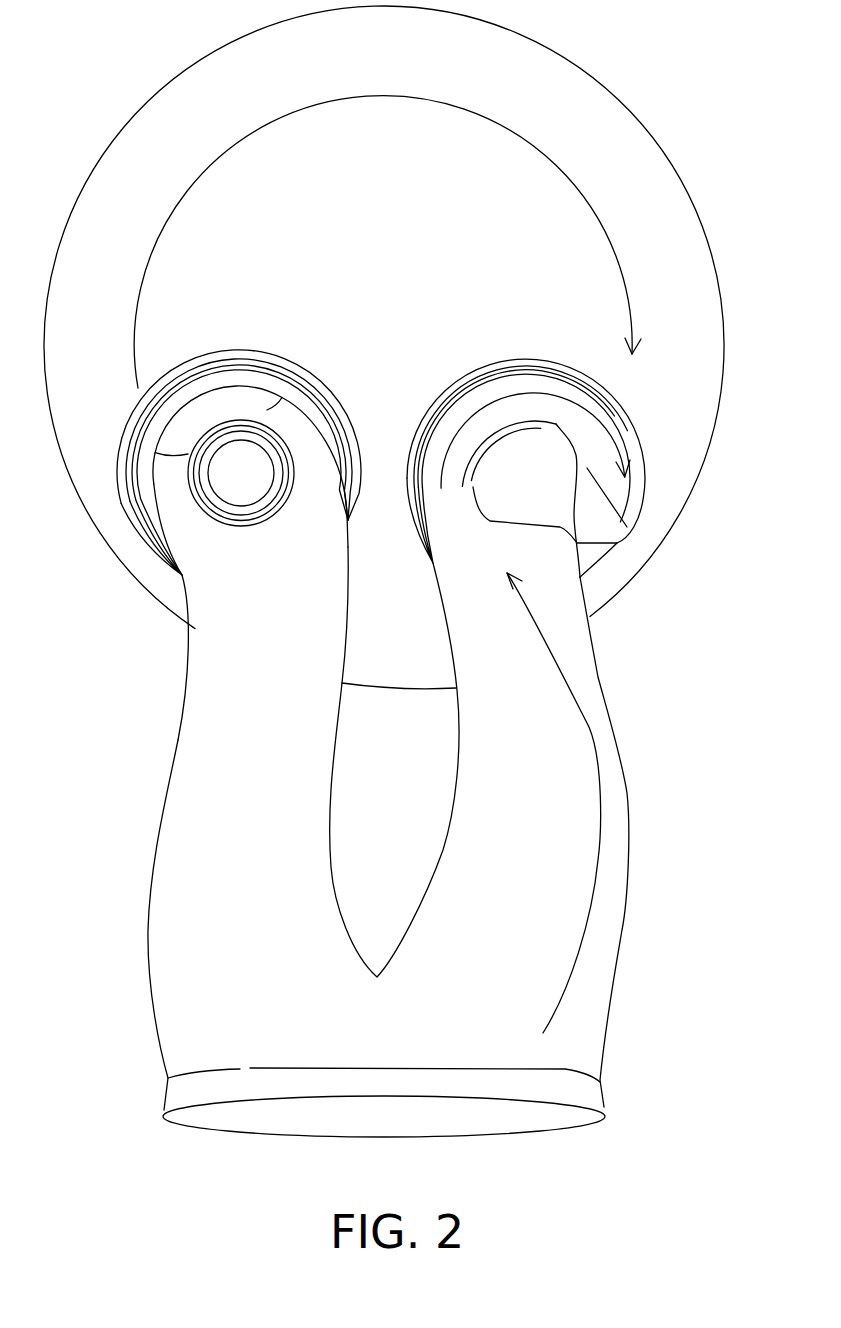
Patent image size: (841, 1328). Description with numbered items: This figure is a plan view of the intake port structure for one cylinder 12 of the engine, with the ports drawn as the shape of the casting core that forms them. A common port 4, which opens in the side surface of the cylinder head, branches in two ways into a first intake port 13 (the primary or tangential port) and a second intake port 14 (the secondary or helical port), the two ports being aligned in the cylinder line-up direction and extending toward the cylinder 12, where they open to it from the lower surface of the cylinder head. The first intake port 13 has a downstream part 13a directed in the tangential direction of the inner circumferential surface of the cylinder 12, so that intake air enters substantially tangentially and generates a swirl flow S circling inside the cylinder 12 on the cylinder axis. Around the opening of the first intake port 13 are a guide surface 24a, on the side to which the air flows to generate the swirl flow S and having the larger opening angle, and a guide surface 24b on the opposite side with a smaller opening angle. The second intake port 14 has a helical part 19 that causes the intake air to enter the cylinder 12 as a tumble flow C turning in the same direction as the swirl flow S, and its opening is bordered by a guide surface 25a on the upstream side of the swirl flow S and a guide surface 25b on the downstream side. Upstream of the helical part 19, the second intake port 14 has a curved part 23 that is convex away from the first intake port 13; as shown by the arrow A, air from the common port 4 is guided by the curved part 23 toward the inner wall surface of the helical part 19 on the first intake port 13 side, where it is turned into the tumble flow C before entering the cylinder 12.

The cylinder 12 is at (185, 80).
The swirl flow S is at (383, 97).
The helical part 19 is at (490, 388).
The tumble flow C is at (557, 395).
The guide surface 24a is at (138, 414).
The guide surface 24b is at (338, 411).
The guide surface 25a is at (632, 422).
The guide surface 25b is at (419, 528).
The downstream part 13a is at (182, 583).
The first intake port 13 is at (183, 768).
The second intake port 14 is at (470, 766).
The curved part 23 is at (632, 825).
The arrow A is at (598, 878).
The common port 4 is at (512, 1124).